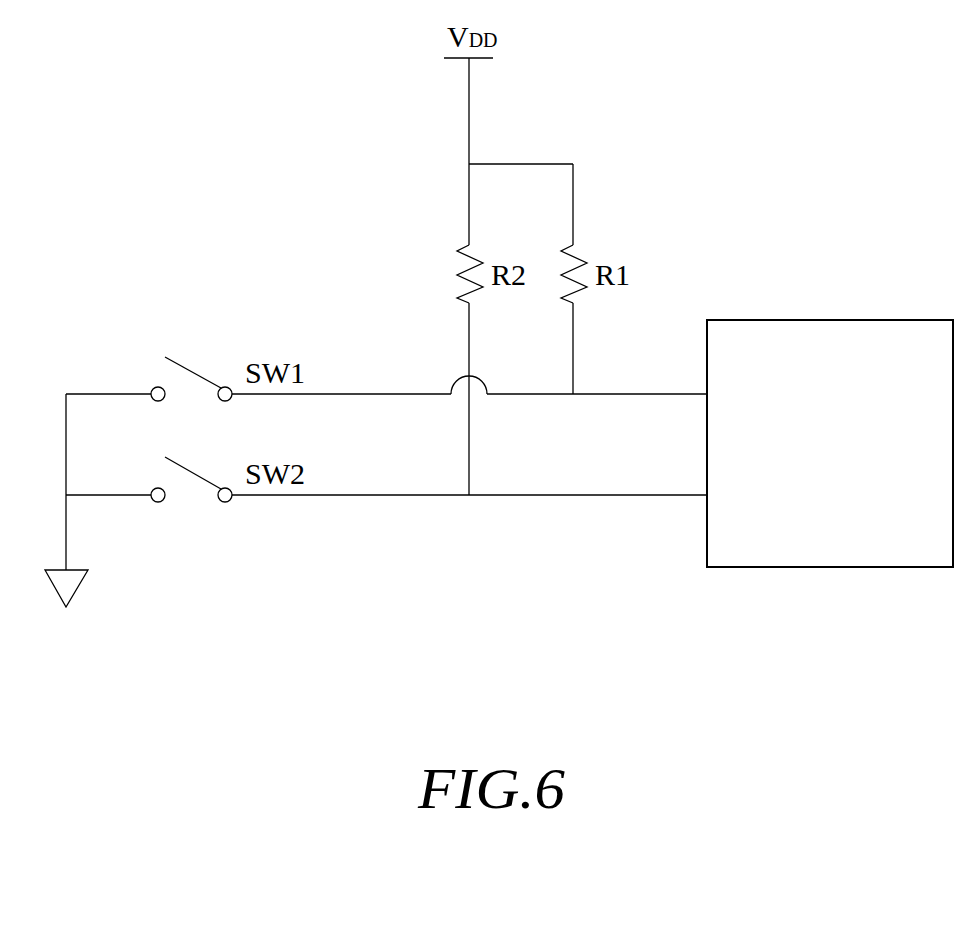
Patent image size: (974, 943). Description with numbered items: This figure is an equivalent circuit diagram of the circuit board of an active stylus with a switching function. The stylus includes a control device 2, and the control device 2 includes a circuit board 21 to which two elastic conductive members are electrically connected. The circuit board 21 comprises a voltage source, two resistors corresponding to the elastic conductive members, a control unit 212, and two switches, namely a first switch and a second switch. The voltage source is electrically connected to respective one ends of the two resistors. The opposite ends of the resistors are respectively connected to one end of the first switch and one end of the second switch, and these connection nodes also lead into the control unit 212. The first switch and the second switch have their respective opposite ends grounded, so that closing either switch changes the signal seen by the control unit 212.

The control device 2 is at (839, 144).
The circuit board 21 is at (831, 238).
The control unit 212 is at (826, 320).